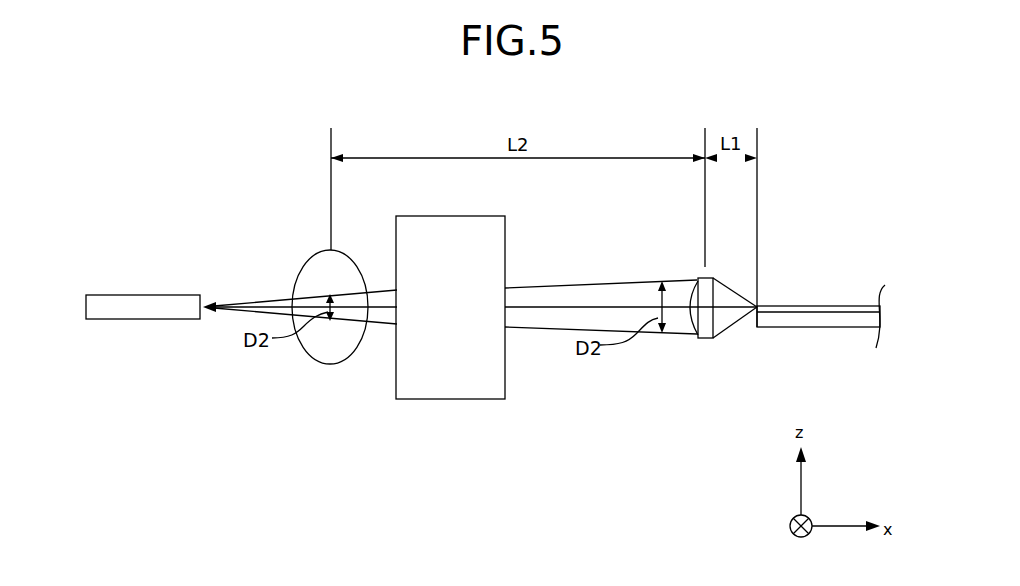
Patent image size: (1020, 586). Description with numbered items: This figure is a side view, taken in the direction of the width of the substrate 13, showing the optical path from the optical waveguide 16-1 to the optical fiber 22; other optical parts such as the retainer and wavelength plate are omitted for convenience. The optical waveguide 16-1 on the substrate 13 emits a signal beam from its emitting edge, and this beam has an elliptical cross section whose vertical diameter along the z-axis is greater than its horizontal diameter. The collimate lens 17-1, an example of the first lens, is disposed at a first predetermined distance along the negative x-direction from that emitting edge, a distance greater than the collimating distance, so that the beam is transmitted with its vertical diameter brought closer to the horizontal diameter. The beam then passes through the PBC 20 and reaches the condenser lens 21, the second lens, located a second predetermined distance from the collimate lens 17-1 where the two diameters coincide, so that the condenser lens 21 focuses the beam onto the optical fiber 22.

The optical fiber 22 is at (145, 295).
The condenser lens 21 is at (345, 253).
The PBC 20 is at (445, 216).
The collimate lens 17-1 is at (703, 340).
The optical waveguide 16-1 is at (820, 306).
The substrate 13 is at (800, 327).